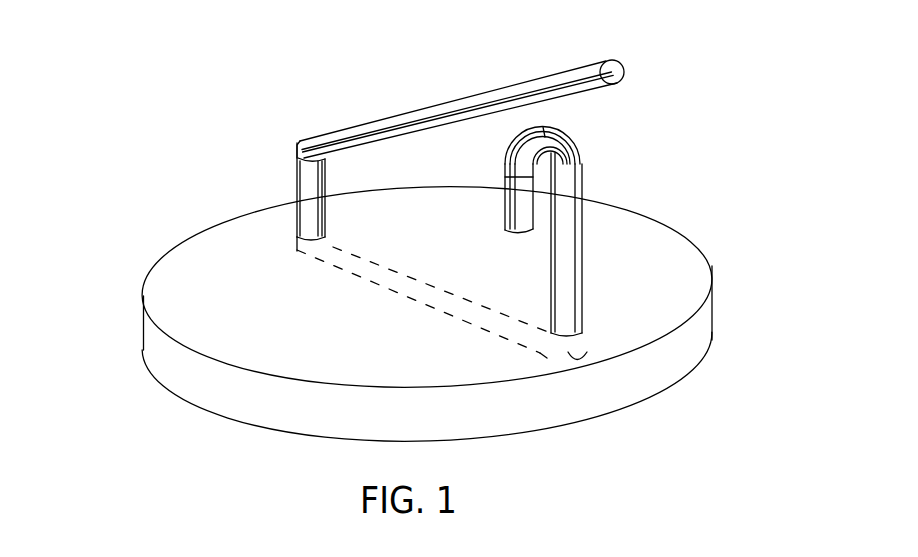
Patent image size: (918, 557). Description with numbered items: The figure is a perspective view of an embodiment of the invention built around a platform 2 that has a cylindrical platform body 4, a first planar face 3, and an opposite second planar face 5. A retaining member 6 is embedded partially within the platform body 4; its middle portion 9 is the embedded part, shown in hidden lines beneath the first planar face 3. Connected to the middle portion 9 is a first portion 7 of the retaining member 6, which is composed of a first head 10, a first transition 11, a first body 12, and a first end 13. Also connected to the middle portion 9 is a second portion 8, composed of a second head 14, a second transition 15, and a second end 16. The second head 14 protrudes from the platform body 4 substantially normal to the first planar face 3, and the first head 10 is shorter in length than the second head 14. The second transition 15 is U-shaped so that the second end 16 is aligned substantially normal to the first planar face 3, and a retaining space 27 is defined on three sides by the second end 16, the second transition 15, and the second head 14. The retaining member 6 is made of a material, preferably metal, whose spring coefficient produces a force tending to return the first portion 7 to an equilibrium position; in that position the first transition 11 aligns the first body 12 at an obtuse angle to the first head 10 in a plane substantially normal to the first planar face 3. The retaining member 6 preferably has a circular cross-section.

The platform 2 is at (120, 375).
The first planar face 3 is at (205, 287).
The cylindrical platform body 4 is at (152, 345).
The second planar face 5 is at (234, 421).
The retaining member 6 is at (370, 125).
The first portion 7 is at (416, 79).
The second portion 8 is at (655, 219).
The middle portion 9 is at (545, 358).
The first head 10 is at (298, 189).
The first transition 11 is at (297, 143).
The first body 12 is at (426, 110).
The first end 13 is at (583, 67).
The second head 14 is at (582, 276).
The second transition 15 is at (567, 133).
The second end 16 is at (582, 202).
The retaining space 27 is at (543, 175).